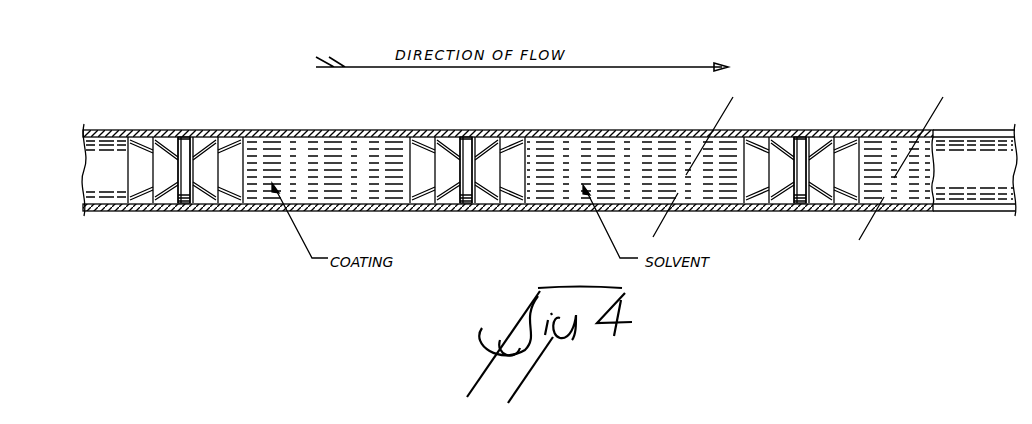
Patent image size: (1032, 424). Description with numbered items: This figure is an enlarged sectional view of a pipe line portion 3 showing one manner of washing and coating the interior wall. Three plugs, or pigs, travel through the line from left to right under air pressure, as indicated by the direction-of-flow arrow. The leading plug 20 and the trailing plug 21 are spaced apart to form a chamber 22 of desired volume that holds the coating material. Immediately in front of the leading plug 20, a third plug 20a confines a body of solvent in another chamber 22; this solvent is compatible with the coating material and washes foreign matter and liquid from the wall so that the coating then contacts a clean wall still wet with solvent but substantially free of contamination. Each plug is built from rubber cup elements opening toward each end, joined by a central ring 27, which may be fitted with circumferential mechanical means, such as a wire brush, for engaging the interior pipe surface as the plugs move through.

The pipe line portion 3 is at (522, 131).
The leading plug 20 is at (468, 140).
The third plug 20a is at (810, 138).
The trailing plug 21 is at (212, 178).
The chamber 22 is at (340, 145).
The central ring 27 is at (185, 138).